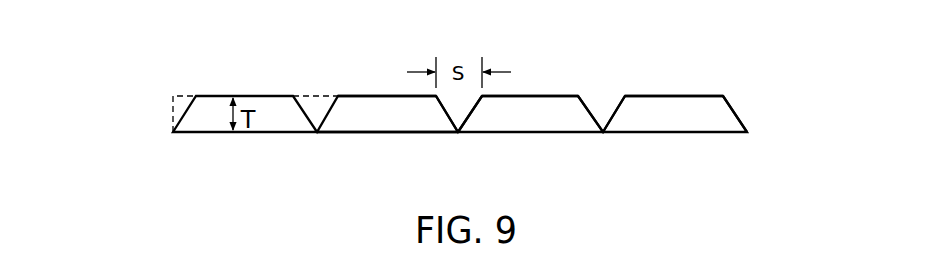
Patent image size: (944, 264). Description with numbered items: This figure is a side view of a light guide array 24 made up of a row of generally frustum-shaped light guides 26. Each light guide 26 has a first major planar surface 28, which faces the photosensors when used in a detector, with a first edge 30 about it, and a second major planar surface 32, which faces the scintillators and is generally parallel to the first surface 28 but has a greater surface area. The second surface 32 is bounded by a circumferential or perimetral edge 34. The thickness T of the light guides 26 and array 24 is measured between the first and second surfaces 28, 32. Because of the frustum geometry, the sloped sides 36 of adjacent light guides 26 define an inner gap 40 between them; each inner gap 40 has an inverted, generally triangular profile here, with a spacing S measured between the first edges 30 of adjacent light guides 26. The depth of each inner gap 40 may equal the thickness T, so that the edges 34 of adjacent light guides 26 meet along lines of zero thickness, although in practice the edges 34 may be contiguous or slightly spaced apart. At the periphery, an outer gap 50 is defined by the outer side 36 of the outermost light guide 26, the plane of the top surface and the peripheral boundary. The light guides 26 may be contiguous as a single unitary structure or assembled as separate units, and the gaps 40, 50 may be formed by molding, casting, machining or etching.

The light guide array 24 is at (175, 47).
The light guide 26 is at (545, 127).
The first major planar surface 28 is at (370, 94).
The first edge 30 is at (400, 94).
The second major planar surface 32 is at (368, 134).
The perimetral edge 34 is at (423, 134).
The sides 36 is at (616, 102).
The inner gap 40 is at (315, 106).
The outer gap 50 is at (181, 107).